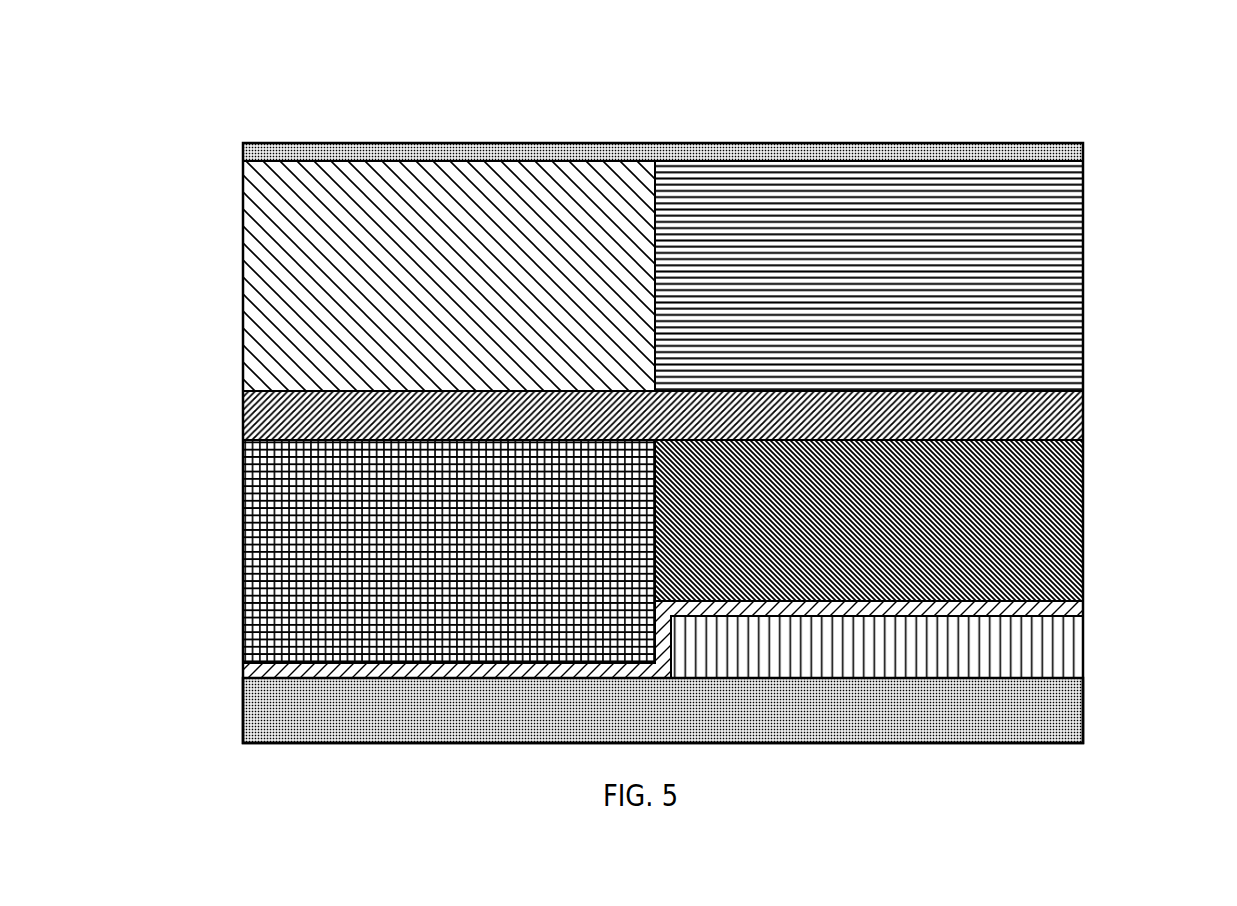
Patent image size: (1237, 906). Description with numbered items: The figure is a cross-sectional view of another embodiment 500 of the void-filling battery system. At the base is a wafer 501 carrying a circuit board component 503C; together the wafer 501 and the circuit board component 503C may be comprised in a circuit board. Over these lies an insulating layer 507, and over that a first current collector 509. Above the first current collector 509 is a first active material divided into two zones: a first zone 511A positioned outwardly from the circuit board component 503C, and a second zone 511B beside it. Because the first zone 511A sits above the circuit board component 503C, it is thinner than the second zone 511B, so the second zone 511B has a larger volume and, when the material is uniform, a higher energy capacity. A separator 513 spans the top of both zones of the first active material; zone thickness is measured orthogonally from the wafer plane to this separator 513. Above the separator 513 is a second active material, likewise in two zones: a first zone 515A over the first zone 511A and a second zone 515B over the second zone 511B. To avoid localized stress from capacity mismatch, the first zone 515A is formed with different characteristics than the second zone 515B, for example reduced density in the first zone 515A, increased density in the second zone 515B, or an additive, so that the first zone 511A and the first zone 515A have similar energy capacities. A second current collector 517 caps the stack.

The void-filling battery system embodiment 500 is at (968, 93).
The second current collector 517 is at (1075, 147).
The second zone of second active material 515B is at (280, 275).
The first zone of second active material 515A is at (1028, 278).
The separator 513 is at (1032, 400).
The second zone of first active material 511B is at (283, 542).
The first zone of first active material 511A is at (1028, 515).
The first current collector 509 is at (1060, 599).
The insulating layer 507 is at (1075, 612).
The circuit board component 503C is at (1045, 644).
The wafer 501 is at (1045, 702).